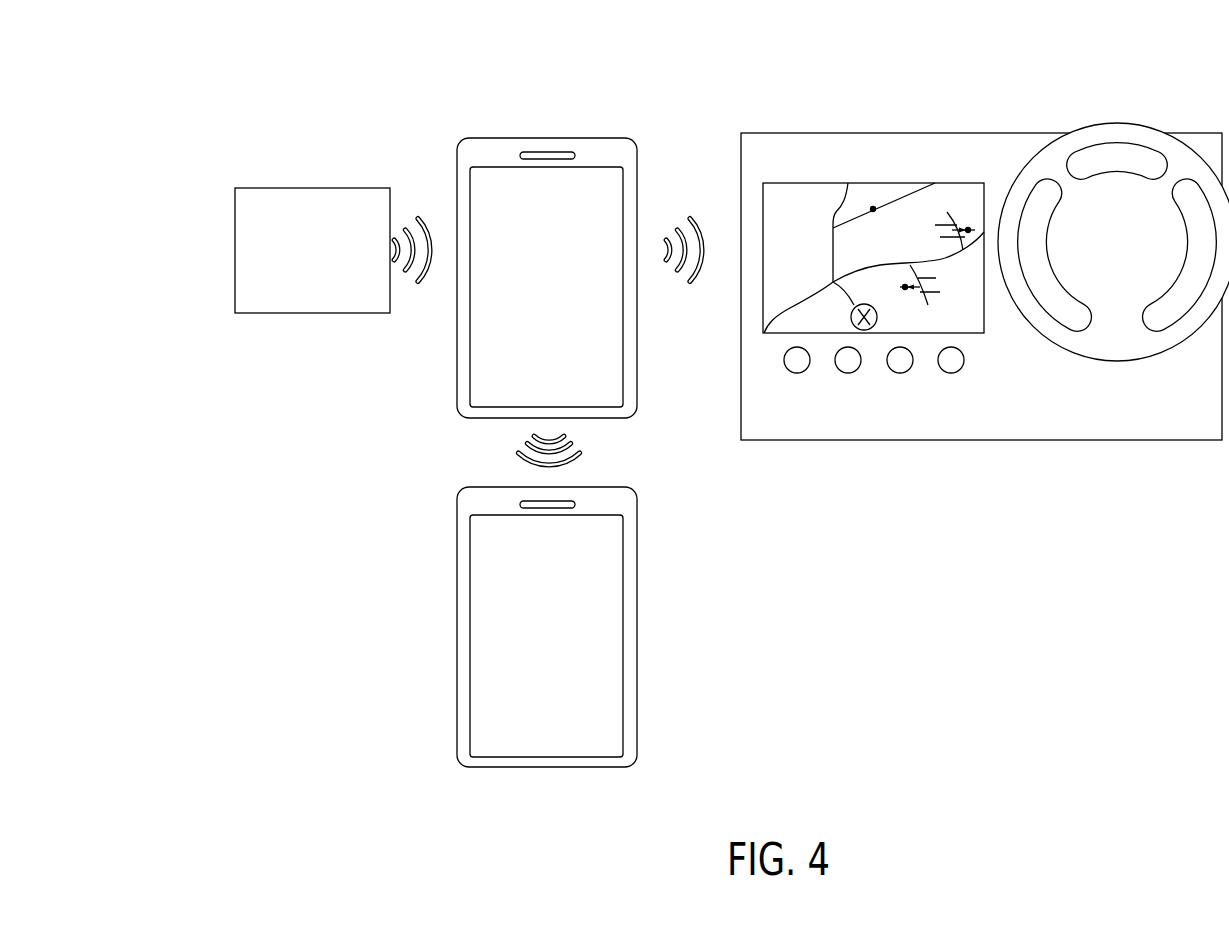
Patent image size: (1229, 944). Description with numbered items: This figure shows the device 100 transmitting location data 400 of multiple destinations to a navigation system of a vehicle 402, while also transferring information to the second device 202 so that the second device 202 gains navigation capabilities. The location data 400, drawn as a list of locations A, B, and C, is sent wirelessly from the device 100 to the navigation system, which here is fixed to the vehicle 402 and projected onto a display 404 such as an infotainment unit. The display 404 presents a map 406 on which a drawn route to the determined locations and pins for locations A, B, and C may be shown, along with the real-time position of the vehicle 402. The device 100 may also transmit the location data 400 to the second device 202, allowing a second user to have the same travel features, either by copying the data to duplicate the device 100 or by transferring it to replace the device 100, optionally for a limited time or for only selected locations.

The device 100 is at (538, 92).
The second device 202 is at (420, 586).
The location data 400 is at (235, 249).
The vehicle 402 is at (985, 361).
The display 404 is at (883, 296).
The map 406 is at (812, 262).